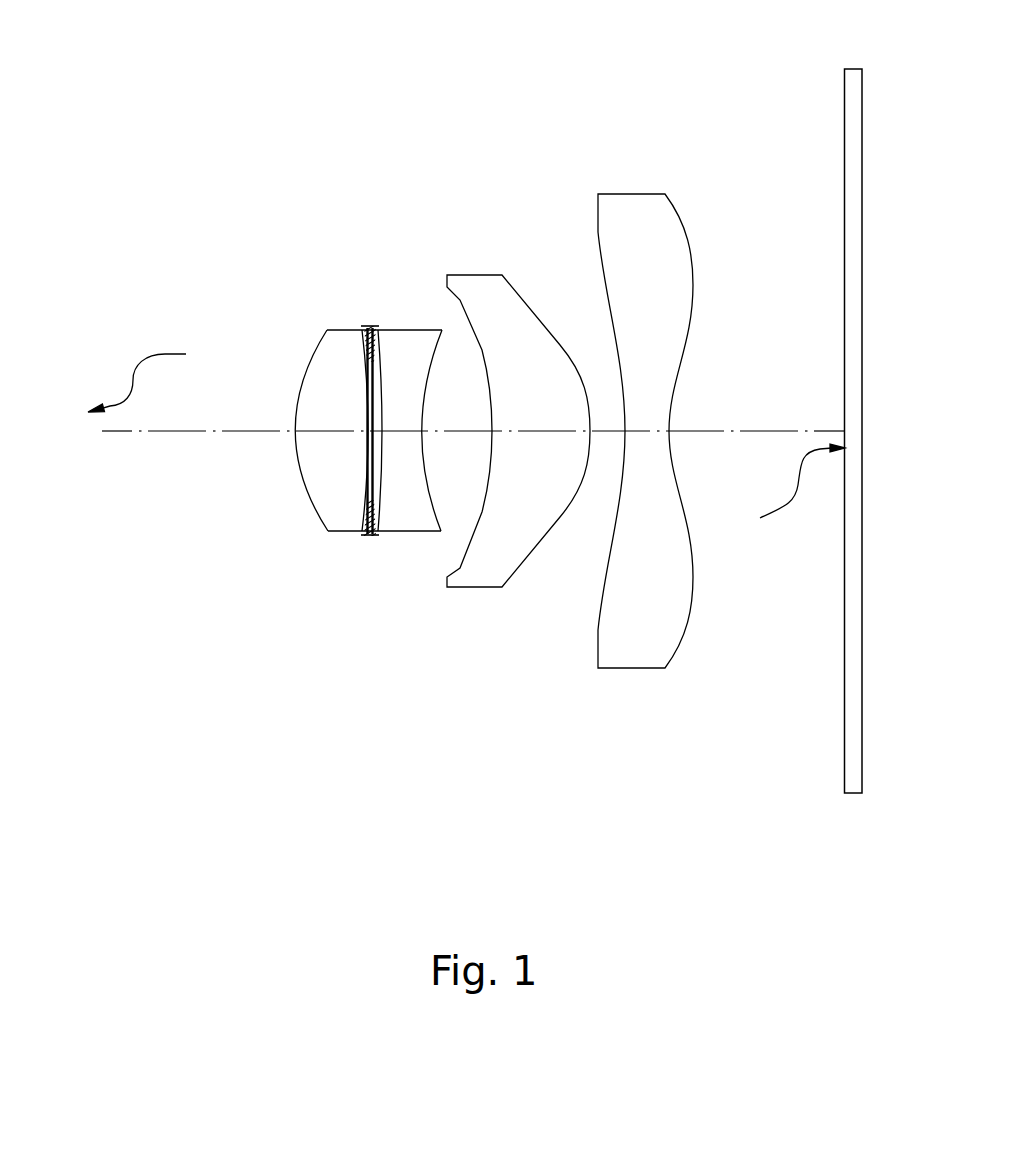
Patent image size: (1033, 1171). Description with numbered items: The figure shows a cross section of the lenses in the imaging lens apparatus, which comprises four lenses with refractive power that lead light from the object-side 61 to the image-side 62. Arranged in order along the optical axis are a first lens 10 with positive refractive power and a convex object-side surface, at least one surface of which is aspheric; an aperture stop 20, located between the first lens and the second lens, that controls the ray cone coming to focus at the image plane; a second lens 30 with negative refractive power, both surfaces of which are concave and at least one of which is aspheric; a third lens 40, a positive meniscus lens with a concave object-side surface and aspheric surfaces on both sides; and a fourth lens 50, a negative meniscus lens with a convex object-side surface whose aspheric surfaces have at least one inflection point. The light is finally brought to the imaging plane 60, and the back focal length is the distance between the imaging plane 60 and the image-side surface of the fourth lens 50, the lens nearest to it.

The first lens 10 is at (343, 358).
The aperture stop 20 is at (364, 333).
The second lens 30 is at (408, 348).
The third lens 40 is at (488, 300).
The fourth lens 50 is at (633, 223).
The imaging plane 60 is at (855, 128).
The object-side 61 is at (152, 377).
The image-side 62 is at (788, 493).